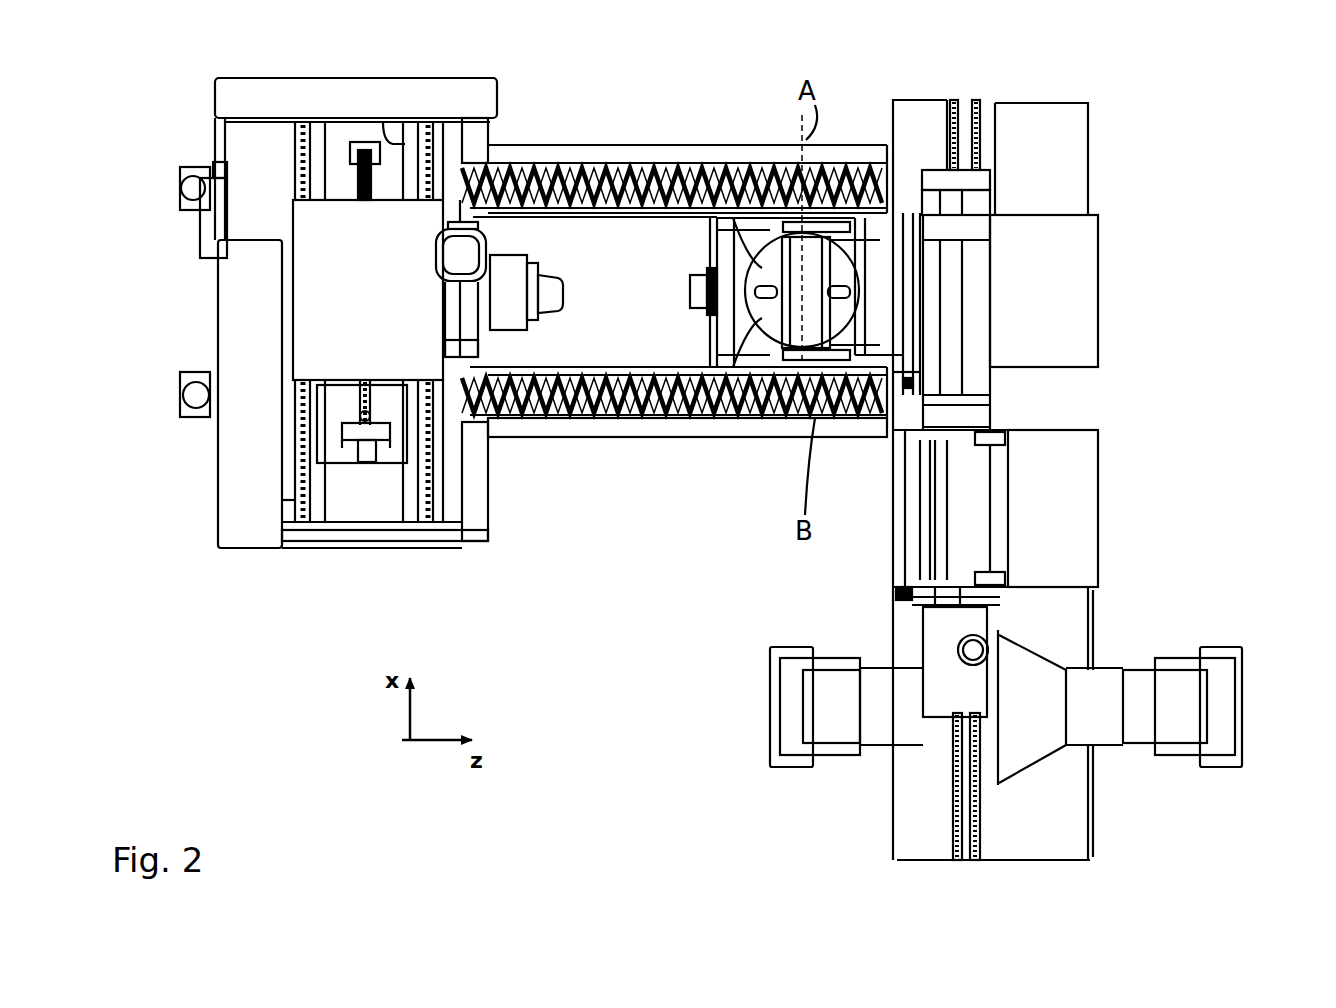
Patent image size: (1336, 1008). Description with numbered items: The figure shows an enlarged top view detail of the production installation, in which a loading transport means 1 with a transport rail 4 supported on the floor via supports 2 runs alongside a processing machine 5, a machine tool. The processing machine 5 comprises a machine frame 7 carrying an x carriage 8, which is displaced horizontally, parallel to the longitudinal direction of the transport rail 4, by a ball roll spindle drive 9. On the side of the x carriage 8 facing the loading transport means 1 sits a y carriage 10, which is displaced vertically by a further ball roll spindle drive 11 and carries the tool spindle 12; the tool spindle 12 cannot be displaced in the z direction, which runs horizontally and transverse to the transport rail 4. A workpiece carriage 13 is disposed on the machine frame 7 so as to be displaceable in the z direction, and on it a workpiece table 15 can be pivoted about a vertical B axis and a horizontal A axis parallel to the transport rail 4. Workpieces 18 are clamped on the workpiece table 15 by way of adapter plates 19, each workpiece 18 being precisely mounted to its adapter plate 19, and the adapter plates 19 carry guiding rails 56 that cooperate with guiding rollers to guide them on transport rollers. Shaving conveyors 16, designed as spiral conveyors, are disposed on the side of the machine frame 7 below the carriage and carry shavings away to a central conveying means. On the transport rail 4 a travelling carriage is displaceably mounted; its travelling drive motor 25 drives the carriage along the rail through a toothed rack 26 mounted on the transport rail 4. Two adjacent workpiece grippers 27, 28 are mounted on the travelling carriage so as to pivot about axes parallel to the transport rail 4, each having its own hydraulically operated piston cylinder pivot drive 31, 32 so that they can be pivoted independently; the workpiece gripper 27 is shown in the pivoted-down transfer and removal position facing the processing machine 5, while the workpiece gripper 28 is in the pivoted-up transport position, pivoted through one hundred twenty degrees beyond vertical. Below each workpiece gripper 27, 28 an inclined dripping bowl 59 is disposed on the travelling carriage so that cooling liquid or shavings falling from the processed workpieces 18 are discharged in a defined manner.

The loading transport means 1 is at (1098, 198).
The supports 2 is at (1195, 705).
The transport rail 4 is at (955, 810).
The processing machine 5 is at (170, 208).
The machine frame 7 is at (230, 97).
The x carriage 8 is at (295, 285).
The ball roll spindle drive 9 is at (350, 428).
The y carriage 10 is at (445, 333).
The ball roll spindle drive 11 is at (435, 255).
The tool spindle 12 is at (550, 278).
The workpiece carriage 13 is at (770, 222).
The workpiece table 15 is at (870, 312).
The shaving conveyor 16 is at (590, 420).
The workpiece 18 is at (775, 420).
The adapter plate 19 is at (862, 272).
The travelling drive motor 25 is at (975, 650).
The toothed rack 26 is at (980, 796).
The workpiece gripper 27 is at (935, 332).
The workpiece gripper 28 is at (1002, 495).
The piston cylinder pivot drive 31 is at (935, 393).
The piston cylinder pivot drive 32 is at (948, 604).
The guiding rail 56 is at (725, 410).
The dripping bowl 59 is at (1085, 232).